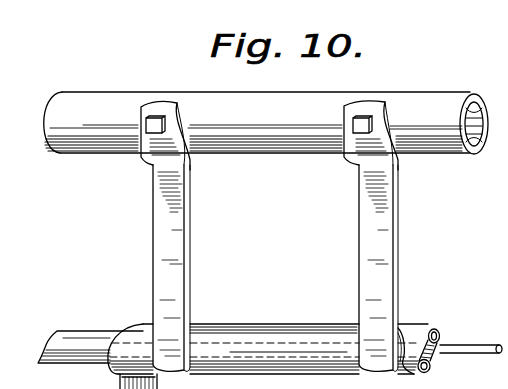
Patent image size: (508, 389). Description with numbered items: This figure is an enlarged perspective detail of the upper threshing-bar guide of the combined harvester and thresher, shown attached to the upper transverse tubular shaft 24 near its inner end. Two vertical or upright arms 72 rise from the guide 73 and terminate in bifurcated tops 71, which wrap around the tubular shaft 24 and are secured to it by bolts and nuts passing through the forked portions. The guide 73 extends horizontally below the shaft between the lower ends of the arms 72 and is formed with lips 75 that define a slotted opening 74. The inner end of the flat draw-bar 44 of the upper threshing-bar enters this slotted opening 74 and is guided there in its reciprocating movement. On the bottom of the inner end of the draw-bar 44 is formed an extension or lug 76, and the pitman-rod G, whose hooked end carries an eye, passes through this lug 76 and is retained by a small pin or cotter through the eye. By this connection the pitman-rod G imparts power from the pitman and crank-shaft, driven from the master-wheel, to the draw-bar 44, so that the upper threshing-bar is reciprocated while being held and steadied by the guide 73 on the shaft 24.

The transverse tubular shaft 24 is at (266, 123).
The bifurcated tops 71 is at (161, 110).
The vertical or upright arms 72 is at (275, 268).
The guide 73 is at (268, 330).
The flat draw-bar 44 is at (78, 347).
The extension or lug 76 is at (124, 381).
The slotted opening 74 is at (427, 332).
The lips 75 is at (438, 331).
The pitman-rod G is at (471, 340).